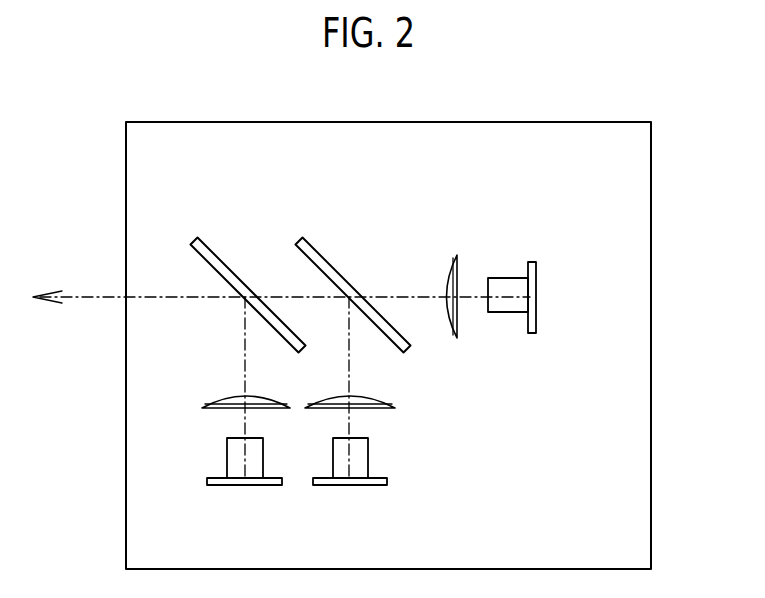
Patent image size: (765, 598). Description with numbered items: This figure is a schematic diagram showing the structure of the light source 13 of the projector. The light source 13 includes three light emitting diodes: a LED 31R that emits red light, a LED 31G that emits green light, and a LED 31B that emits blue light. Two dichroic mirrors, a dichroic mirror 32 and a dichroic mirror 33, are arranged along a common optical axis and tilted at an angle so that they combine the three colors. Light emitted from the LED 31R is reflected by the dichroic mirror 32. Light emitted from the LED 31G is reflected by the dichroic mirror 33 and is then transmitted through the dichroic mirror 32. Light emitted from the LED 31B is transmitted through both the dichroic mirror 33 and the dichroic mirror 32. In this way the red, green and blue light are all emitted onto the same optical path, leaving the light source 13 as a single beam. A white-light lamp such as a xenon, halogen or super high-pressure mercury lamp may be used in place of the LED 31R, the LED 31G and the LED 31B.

The light source 13 is at (652, 174).
The dichroic mirror 32 is at (213, 247).
The dichroic mirror 33 is at (317, 245).
The LED 31B is at (505, 278).
The LED 31R is at (233, 455).
The LED 31G is at (358, 465).